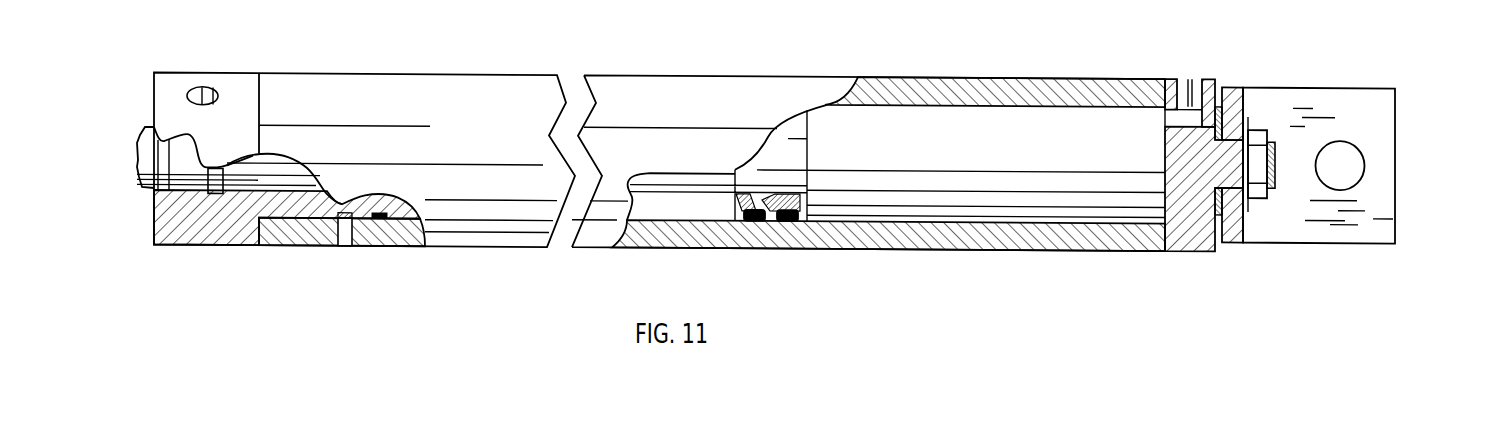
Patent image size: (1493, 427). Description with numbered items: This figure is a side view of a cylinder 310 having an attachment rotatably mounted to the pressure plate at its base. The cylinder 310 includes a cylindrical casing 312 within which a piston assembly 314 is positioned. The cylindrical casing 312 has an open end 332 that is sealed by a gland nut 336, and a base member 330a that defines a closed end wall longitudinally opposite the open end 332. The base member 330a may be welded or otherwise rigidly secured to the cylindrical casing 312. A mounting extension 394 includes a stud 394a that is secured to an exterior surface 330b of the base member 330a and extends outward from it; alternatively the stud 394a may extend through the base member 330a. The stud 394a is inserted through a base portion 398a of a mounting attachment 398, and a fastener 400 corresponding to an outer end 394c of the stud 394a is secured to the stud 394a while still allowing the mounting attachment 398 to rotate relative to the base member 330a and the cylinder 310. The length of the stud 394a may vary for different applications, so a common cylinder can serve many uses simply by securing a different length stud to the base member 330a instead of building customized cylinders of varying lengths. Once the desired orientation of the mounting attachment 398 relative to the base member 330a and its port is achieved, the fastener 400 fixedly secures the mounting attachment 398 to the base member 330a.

The cylinder 310 is at (670, 48).
The cylindrical casing 312 is at (917, 90).
The piston assembly 314 is at (705, 203).
The base member 330a is at (1175, 240).
The exterior surface 330b is at (1215, 82).
The open end 332 is at (260, 72).
The gland nut 336 is at (169, 89).
The mounting extension 394 is at (1300, 144).
The stud 394a is at (1214, 250).
The outer end 394c is at (1275, 165).
The mounting attachment 398 is at (1373, 219).
The base portion 398a is at (1243, 230).
The fastener 400 is at (1262, 137).